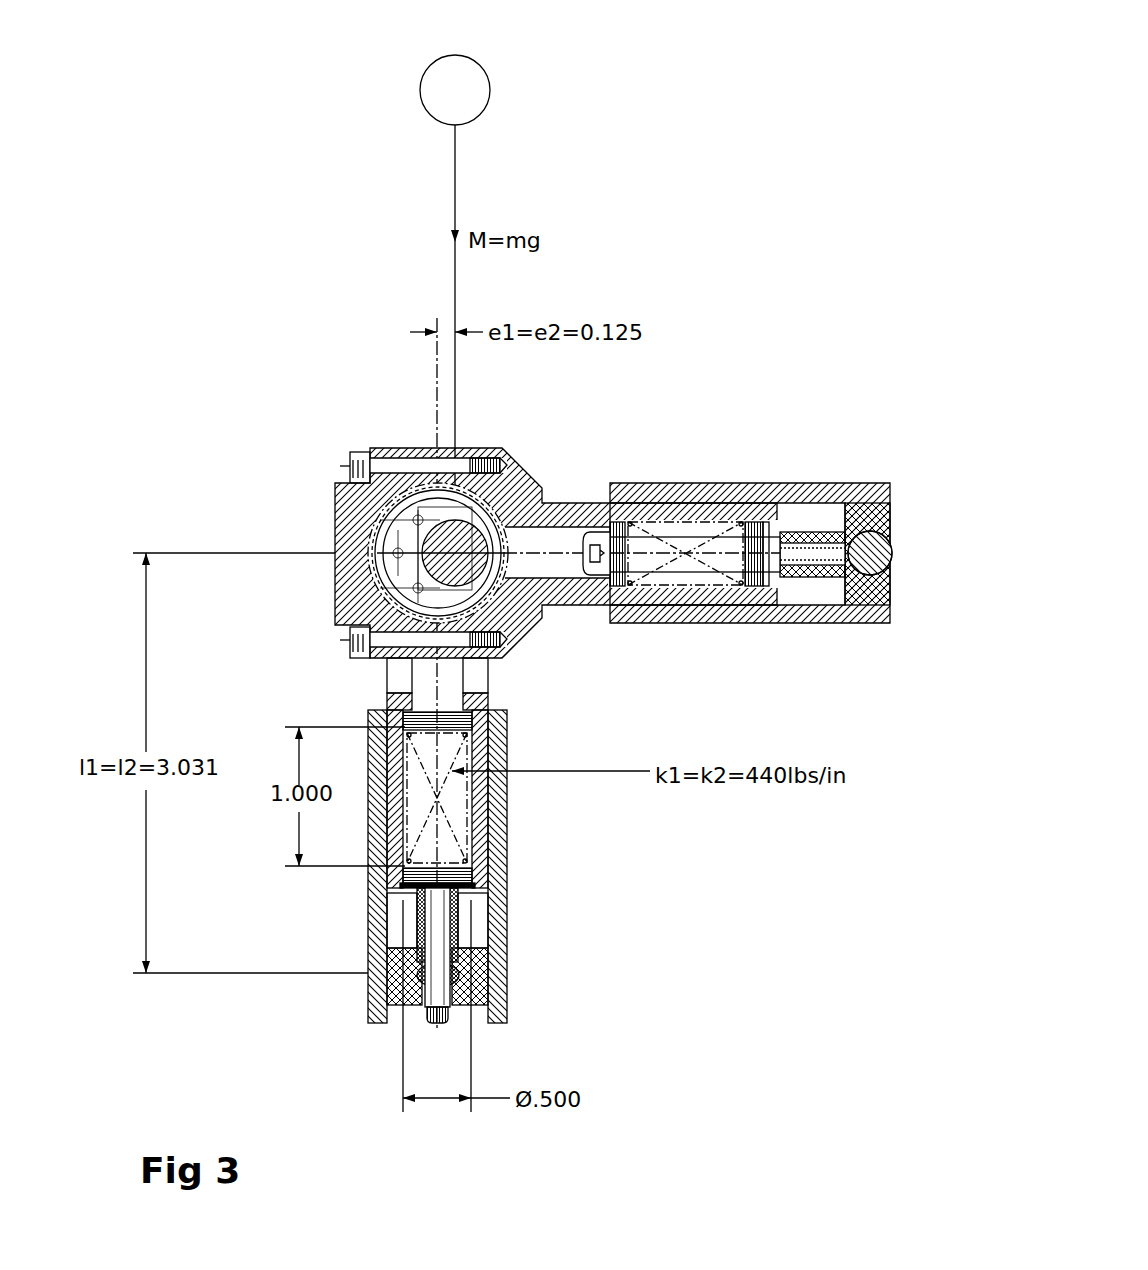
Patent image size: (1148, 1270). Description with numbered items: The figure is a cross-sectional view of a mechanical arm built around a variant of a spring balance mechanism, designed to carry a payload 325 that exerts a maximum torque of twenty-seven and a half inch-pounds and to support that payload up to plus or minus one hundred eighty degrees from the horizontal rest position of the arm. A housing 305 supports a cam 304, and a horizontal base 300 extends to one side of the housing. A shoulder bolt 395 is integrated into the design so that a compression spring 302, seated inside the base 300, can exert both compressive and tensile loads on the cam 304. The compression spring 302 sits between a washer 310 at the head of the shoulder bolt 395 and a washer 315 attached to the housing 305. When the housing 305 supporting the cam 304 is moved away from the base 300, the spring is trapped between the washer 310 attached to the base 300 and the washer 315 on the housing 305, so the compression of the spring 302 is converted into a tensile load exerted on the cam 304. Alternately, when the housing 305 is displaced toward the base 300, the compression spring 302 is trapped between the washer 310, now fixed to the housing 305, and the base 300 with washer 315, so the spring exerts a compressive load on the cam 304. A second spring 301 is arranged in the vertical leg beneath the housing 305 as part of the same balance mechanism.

The payload 325 is at (445, 71).
The housing 305 is at (513, 452).
The cam 304 is at (382, 530).
The compression spring 302 is at (698, 517).
The washer 315 is at (758, 518).
The washer 310 is at (622, 593).
The shoulder bolt 395 is at (593, 578).
The base 300 is at (872, 627).
The spring 301 is at (450, 788).